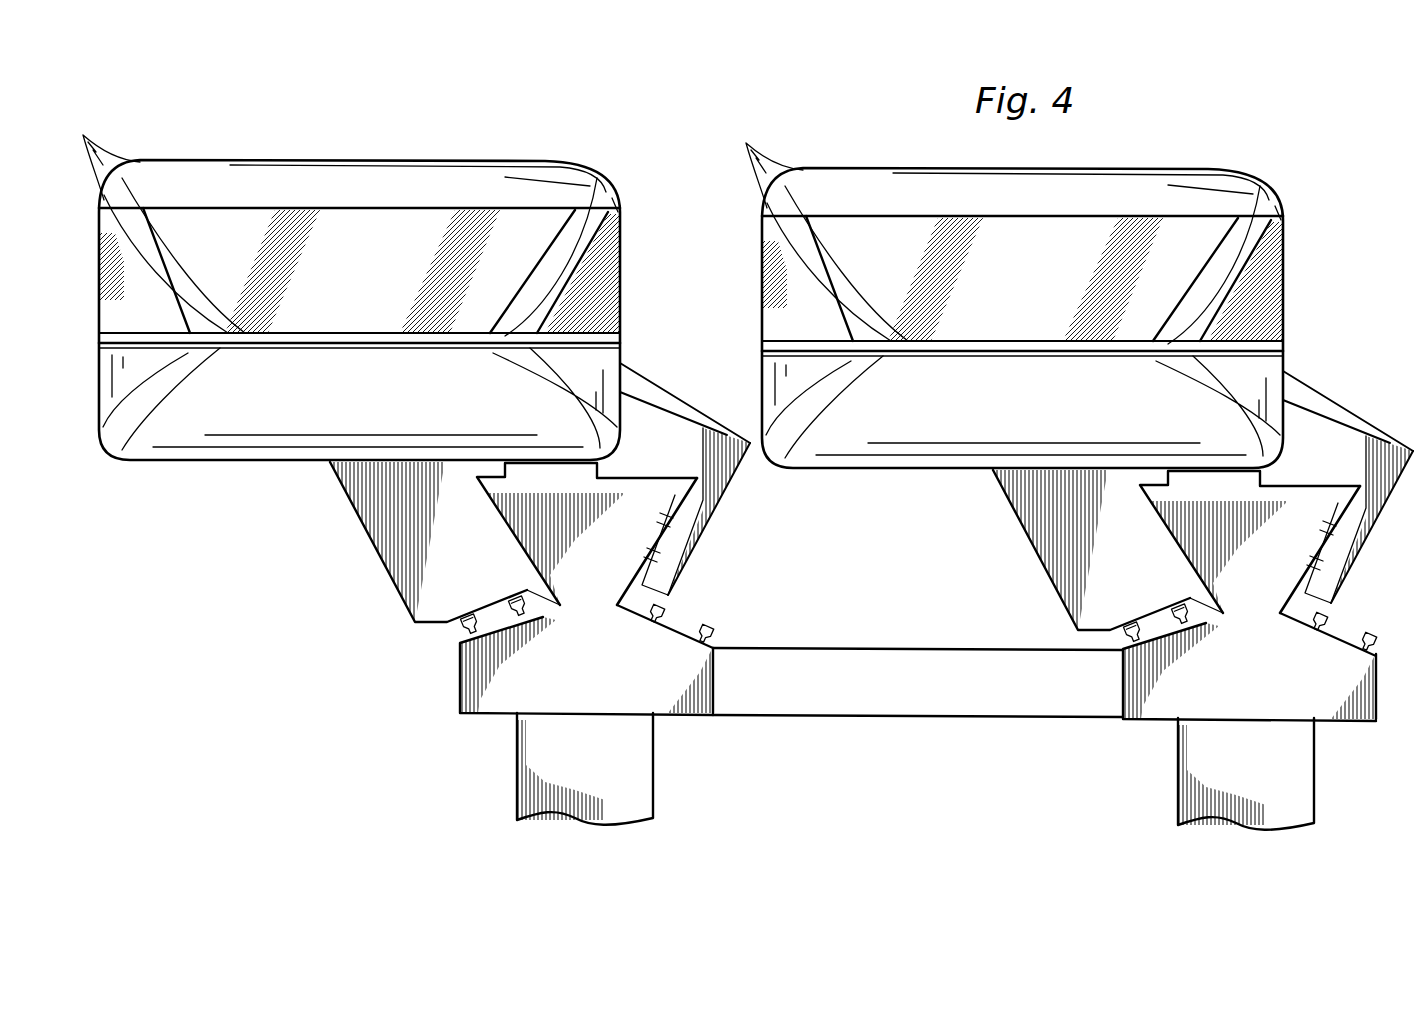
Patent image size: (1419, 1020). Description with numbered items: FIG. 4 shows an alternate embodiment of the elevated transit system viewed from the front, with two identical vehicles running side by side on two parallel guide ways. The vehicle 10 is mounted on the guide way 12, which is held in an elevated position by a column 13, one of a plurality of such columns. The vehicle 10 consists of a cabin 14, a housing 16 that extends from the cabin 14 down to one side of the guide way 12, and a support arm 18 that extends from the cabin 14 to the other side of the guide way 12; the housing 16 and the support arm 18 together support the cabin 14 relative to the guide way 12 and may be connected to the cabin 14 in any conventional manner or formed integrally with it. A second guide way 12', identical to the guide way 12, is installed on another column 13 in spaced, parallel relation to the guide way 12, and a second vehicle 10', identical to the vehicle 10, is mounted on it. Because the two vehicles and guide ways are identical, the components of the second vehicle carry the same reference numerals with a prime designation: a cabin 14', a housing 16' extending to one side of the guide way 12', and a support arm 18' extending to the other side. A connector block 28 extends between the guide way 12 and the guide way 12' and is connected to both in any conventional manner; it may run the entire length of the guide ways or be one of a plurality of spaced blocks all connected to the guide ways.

The vehicle 10 is at (416, 357).
The vehicle 10' is at (1079, 384).
The guide way 12 is at (586, 666).
The guide way 12' is at (1249, 672).
The column 13 is at (600, 768).
The cabin 14 is at (351, 283).
The cabin 14' is at (1014, 290).
The housing 16 is at (513, 548).
The housing 16' is at (1176, 556).
The support arm 18 is at (683, 505).
The support arm 18' is at (1346, 513).
The connector block 28 is at (920, 718).